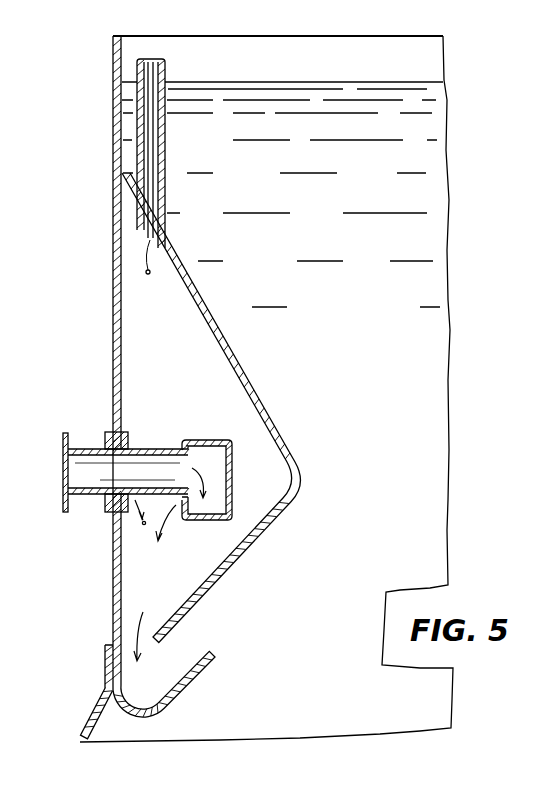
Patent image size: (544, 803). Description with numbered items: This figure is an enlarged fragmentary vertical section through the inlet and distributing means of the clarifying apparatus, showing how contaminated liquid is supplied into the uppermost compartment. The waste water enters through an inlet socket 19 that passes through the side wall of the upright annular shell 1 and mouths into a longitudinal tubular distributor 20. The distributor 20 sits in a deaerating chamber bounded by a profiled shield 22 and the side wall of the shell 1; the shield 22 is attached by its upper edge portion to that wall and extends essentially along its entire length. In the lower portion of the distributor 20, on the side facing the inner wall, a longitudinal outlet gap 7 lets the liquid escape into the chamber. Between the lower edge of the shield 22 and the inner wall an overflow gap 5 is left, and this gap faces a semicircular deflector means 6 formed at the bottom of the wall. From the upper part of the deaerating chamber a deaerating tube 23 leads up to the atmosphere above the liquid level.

The annular shell 1 is at (113, 307).
The overflow gap 5 is at (127, 623).
The semicircular deflector means 6 is at (177, 700).
The longitudinal outlet gap 7 is at (184, 508).
The inlet socket 19 is at (85, 445).
The longitudinal tubular distributor 20 is at (233, 468).
The profiled shield 22 is at (247, 380).
The deaerating tube 23 is at (163, 122).